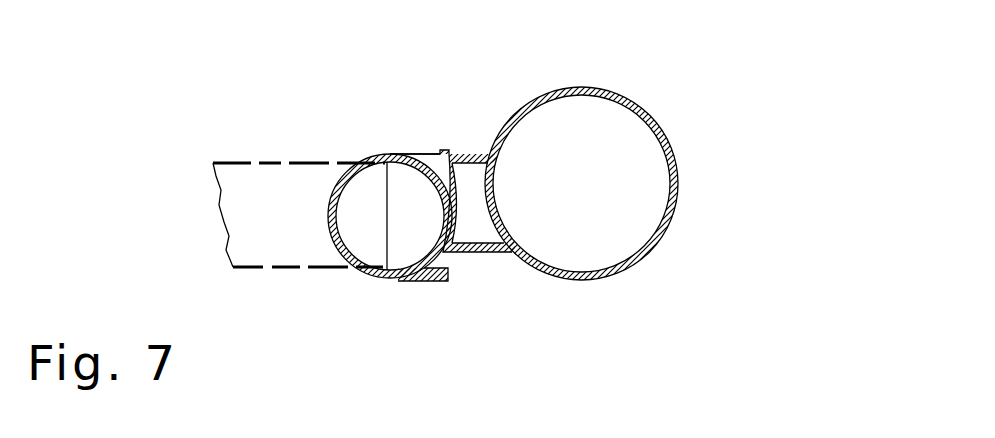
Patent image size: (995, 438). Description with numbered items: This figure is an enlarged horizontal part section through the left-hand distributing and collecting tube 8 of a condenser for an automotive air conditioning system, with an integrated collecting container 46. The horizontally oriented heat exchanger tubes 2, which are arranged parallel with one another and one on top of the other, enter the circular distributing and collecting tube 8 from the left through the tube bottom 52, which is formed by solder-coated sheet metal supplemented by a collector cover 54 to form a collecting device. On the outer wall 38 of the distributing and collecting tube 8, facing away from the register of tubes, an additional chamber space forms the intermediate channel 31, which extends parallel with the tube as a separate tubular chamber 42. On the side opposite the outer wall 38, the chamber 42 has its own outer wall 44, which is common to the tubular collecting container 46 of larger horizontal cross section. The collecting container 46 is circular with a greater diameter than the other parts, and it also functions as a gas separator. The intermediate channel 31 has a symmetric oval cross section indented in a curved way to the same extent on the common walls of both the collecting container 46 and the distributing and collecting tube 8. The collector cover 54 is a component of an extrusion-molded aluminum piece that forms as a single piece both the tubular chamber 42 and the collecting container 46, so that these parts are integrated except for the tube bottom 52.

The heat exchanger tube 2 is at (287, 228).
The distributing and collecting tube 8 is at (422, 220).
The intermediate channel 31 is at (468, 262).
The chamber 42 is at (468, 262).
The outer wall 38 is at (468, 262).
The collector cover 54 is at (481, 228).
The outer wall 44 is at (492, 178).
The collecting container 46 is at (668, 150).
The tube bottom 52 is at (422, 156).